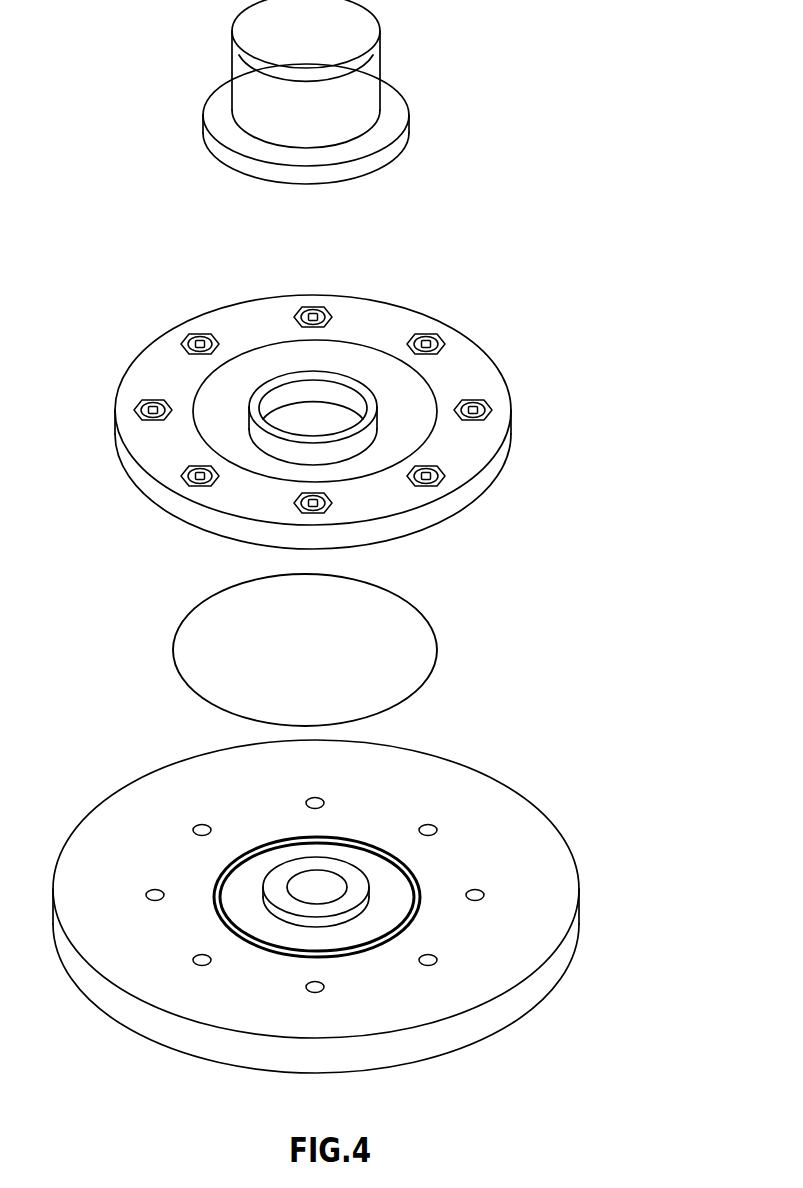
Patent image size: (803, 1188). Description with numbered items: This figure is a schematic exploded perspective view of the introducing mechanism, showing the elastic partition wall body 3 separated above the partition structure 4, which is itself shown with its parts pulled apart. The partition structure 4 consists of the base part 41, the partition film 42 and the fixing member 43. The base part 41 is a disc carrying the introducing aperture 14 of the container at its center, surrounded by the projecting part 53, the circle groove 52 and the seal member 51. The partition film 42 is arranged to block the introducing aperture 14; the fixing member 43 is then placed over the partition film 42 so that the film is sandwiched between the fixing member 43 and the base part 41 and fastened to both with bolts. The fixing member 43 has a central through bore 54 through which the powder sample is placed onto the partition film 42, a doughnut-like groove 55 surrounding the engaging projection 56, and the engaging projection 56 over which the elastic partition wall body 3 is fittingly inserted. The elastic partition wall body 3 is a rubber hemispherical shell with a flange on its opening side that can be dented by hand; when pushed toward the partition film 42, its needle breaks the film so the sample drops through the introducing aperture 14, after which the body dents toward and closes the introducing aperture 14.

The elastic partition wall body 3 is at (232, 38).
The partition structure 4 is at (633, 579).
The introducing aperture 14 is at (332, 885).
The base part 41 is at (343, 891).
The partition film 42 is at (437, 645).
The fixing member 43 is at (371, 455).
The seal member 51 is at (418, 913).
The circle groove 52 is at (418, 877).
The projecting part 53 is at (263, 900).
The through bore 54 is at (328, 418).
The doughnut-like groove 55 is at (407, 430).
The engaging projection 56 is at (373, 396).